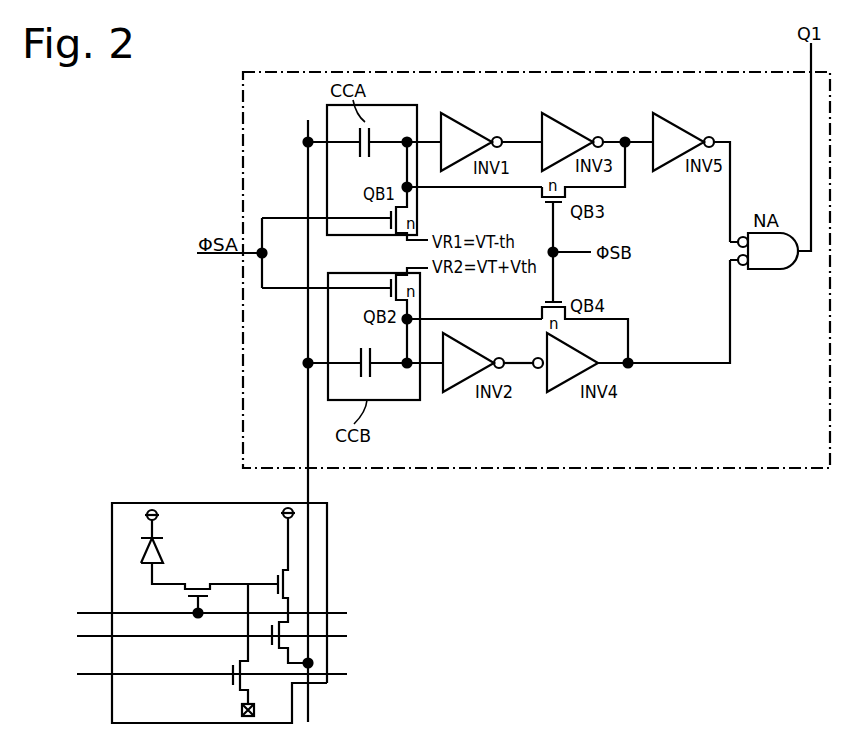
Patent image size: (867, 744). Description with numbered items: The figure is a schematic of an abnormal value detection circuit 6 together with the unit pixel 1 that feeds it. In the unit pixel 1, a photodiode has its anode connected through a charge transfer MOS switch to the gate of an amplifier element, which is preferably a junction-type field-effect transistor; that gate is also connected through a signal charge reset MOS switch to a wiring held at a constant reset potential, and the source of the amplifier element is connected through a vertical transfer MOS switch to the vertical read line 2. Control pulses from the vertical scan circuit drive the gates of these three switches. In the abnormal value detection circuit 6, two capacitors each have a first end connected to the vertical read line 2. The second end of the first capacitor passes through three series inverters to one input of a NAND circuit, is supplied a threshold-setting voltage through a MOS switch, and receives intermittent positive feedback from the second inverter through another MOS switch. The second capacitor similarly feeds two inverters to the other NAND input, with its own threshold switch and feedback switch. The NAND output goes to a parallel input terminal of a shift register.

The unit pixel 1 is at (327, 542).
The vertical read line 2 is at (310, 484).
The abnormal value detection circuit 6 is at (522, 72).